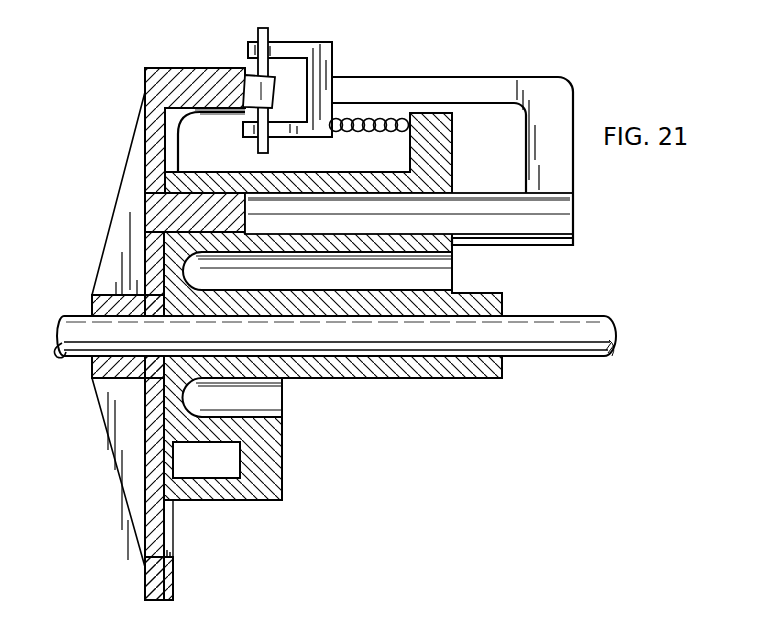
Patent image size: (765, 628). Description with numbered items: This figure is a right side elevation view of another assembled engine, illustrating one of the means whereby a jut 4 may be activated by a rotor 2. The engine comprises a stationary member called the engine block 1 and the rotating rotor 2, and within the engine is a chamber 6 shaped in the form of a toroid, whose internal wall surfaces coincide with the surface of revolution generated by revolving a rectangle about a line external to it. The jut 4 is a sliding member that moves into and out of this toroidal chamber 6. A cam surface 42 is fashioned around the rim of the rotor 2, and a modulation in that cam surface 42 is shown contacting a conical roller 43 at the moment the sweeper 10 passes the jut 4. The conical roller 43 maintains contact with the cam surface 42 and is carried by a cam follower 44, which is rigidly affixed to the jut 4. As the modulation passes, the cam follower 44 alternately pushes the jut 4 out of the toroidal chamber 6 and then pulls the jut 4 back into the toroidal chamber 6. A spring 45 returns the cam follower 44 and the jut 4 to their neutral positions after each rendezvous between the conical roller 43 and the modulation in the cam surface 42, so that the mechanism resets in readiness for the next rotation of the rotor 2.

The engine block 1 is at (453, 170).
The rotor 2 is at (206, 68).
The jut 4 is at (444, 222).
The toroidal chamber 6 is at (210, 473).
The sweeper 10 is at (206, 225).
The cam surface 42 is at (175, 600).
The conical roller 43 is at (275, 95).
The cam follower 44 is at (459, 77).
The spring 45 is at (385, 133).